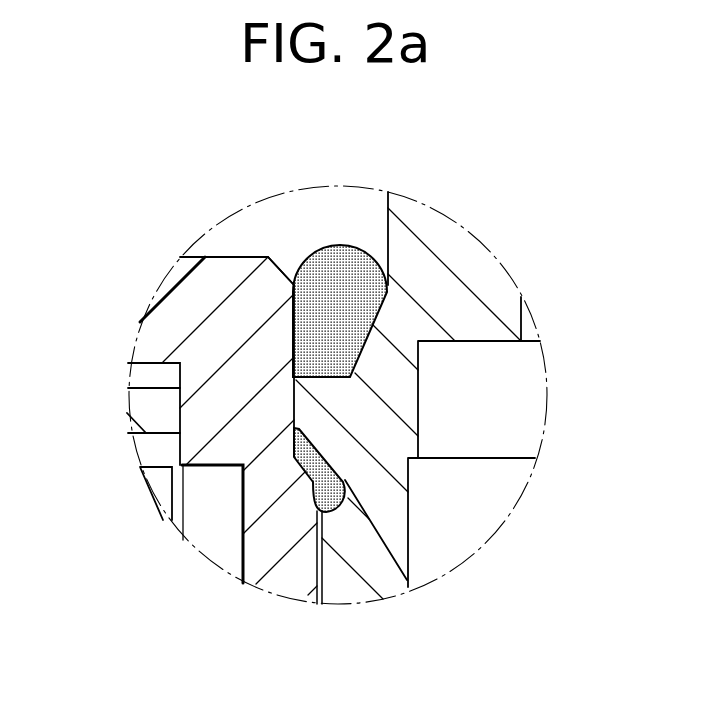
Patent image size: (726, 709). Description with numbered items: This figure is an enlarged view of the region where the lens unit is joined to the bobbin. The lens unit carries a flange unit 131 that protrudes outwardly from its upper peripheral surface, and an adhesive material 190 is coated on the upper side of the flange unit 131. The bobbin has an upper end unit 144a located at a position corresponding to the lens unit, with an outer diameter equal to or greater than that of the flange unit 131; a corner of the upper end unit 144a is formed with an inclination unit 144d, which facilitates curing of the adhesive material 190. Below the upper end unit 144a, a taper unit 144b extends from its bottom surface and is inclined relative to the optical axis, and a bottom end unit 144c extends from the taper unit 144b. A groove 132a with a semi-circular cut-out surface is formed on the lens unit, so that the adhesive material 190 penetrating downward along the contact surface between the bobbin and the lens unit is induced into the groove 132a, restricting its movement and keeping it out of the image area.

The flange unit 131 is at (314, 415).
The groove 132a is at (347, 500).
The upper end unit 144a is at (203, 312).
The taper unit 144b is at (302, 471).
The bottom end unit 144c is at (288, 580).
The inclination unit 144d is at (291, 282).
The adhesive material 190 is at (339, 262).